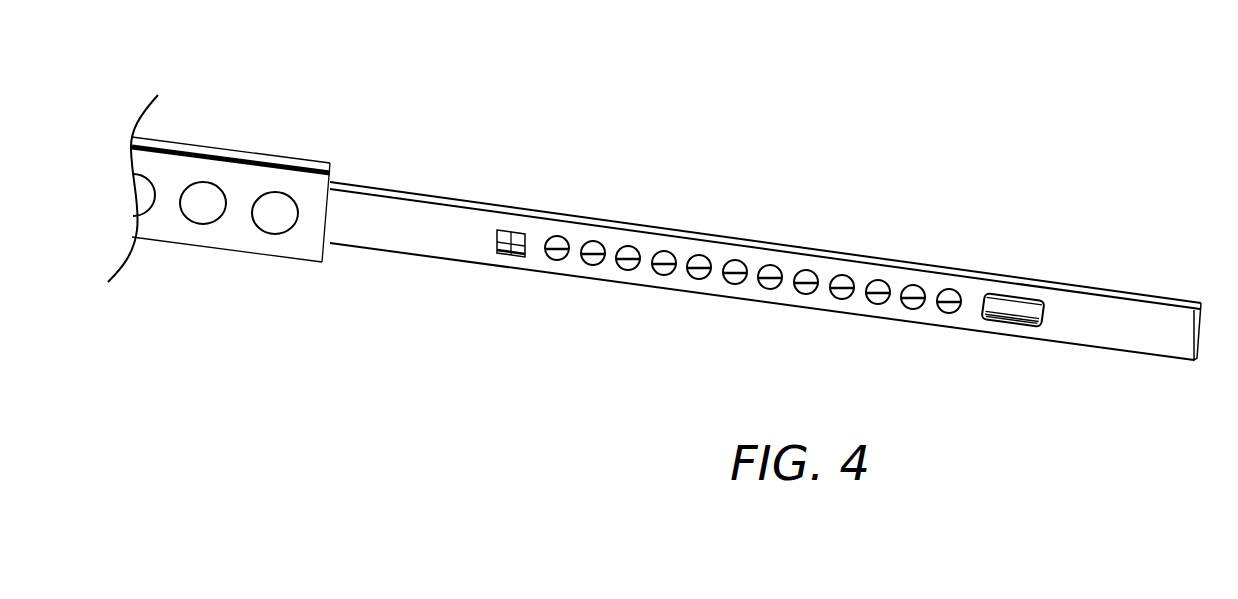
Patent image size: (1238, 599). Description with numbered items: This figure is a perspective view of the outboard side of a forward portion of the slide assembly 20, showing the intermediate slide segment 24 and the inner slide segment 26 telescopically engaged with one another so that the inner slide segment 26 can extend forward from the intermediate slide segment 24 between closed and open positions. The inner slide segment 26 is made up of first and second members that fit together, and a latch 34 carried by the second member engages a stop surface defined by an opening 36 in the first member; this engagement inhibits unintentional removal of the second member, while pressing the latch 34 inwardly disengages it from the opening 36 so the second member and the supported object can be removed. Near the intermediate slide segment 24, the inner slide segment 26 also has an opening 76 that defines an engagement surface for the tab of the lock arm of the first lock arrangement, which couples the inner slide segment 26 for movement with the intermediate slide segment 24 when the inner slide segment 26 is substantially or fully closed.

The slide assembly 20 is at (870, 150).
The intermediate slide segment 24 is at (267, 163).
The inner slide segment 26 is at (391, 233).
The latch 34 is at (1030, 300).
The opening 36 is at (1012, 326).
The opening 76 is at (512, 232).